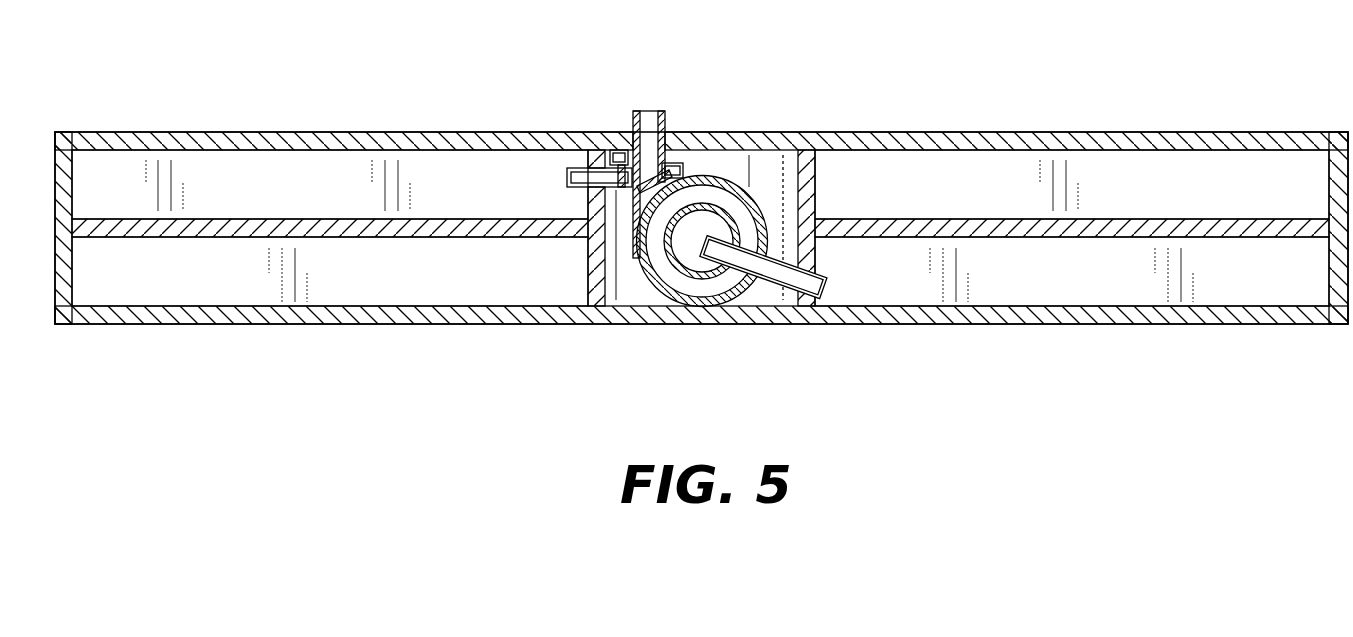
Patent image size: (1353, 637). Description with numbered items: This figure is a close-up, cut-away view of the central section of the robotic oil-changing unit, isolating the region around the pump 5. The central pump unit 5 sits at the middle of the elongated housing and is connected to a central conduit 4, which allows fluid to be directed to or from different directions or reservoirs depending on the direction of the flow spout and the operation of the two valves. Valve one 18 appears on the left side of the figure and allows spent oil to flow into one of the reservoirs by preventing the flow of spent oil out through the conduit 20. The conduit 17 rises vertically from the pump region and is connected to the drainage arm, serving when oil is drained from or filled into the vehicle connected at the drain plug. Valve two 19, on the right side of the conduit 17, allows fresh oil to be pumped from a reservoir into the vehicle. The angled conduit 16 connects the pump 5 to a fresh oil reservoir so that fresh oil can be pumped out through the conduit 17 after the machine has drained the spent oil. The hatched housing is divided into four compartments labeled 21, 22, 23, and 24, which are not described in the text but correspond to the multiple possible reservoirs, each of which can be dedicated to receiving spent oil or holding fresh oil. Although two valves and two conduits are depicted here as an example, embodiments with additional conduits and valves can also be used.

The central conduit 4 is at (713, 222).
The pump 5 is at (668, 270).
The conduit 16 is at (828, 295).
The conduit 17 is at (648, 125).
The valve 1 18 is at (618, 150).
The valve 2 19 is at (675, 163).
The conduit 20 is at (568, 183).
The lower left chamber 21 is at (225, 288).
The upper left chamber 22 is at (130, 160).
The upper right chamber 23 is at (1148, 160).
The lower right chamber 24 is at (1100, 290).